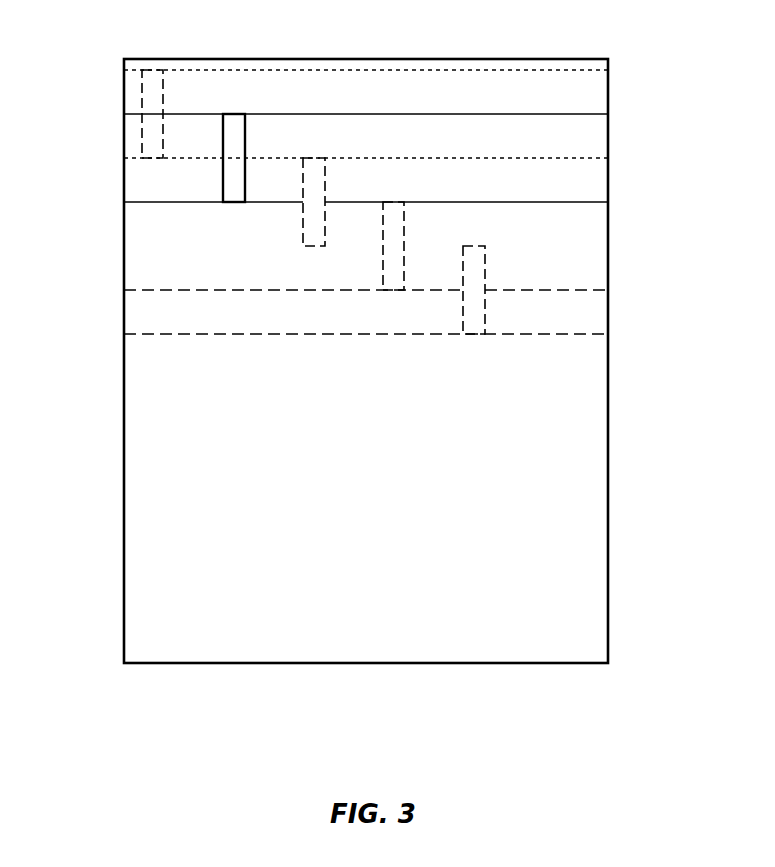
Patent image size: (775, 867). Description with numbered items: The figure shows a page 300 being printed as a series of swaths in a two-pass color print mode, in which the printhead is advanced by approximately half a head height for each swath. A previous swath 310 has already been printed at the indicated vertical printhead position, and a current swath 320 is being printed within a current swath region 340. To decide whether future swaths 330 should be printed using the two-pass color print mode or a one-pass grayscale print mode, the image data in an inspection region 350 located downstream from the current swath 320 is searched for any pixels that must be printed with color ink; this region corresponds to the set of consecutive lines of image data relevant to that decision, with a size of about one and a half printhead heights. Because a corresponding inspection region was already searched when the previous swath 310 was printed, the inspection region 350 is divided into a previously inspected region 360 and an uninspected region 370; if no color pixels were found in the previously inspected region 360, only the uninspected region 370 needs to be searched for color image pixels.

The page 300 is at (368, 58).
The previous swath 310 is at (151, 70).
The current swath 320 is at (253, 97).
The future swaths 330 is at (312, 158).
The current swath region 340 is at (618, 116).
The inspection region 350 is at (447, 270).
The previously inspected region 360 is at (618, 204).
The uninspected region 370 is at (409, 314).